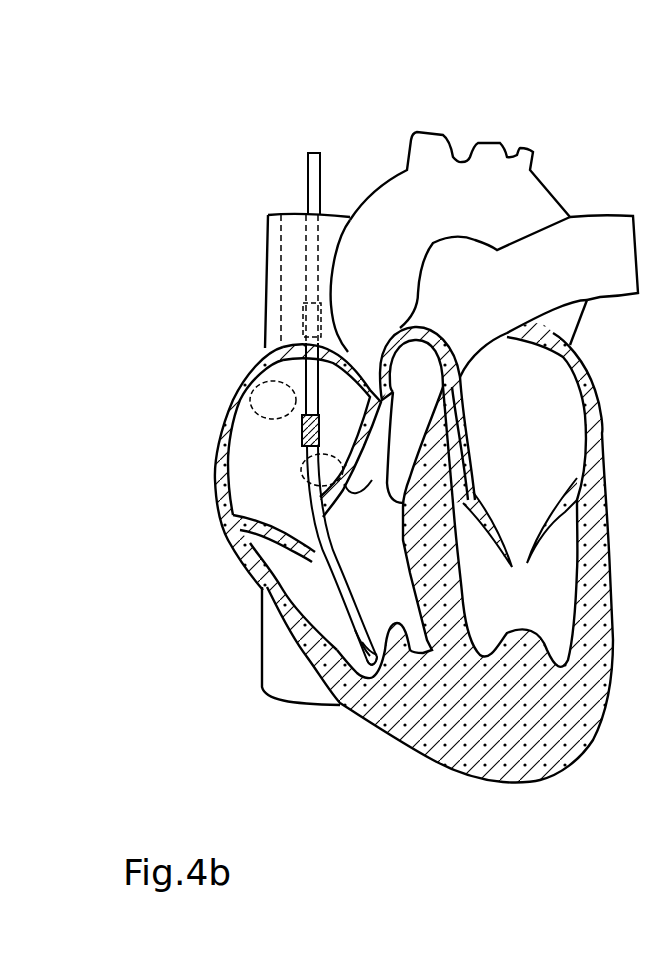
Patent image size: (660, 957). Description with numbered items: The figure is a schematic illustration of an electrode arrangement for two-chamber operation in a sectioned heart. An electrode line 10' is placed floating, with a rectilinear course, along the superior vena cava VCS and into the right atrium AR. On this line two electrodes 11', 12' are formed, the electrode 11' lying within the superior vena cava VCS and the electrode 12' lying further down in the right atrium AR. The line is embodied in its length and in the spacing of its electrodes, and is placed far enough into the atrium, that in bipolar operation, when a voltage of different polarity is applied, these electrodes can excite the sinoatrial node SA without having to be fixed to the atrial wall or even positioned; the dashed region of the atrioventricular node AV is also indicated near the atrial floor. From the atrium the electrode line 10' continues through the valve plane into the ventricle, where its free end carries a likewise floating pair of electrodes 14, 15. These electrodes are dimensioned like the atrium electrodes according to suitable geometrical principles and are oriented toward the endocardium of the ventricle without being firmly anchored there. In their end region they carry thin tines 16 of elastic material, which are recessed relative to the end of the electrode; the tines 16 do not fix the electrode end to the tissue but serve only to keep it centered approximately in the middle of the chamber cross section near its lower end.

The electrode line 10' is at (252, 375).
The electrode 11' is at (224, 296).
The electrode 12' is at (223, 409).
The floating electrode 14 is at (370, 652).
The floating electrode 15 is at (378, 654).
The tines 16 is at (375, 665).
The superior vena cava VCS is at (268, 248).
The sinoatrial node SA is at (262, 386).
The atrioventricular node AV is at (322, 463).
The right atrium AR is at (263, 462).